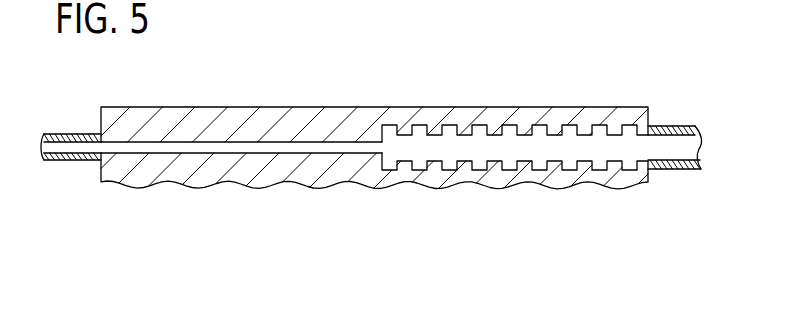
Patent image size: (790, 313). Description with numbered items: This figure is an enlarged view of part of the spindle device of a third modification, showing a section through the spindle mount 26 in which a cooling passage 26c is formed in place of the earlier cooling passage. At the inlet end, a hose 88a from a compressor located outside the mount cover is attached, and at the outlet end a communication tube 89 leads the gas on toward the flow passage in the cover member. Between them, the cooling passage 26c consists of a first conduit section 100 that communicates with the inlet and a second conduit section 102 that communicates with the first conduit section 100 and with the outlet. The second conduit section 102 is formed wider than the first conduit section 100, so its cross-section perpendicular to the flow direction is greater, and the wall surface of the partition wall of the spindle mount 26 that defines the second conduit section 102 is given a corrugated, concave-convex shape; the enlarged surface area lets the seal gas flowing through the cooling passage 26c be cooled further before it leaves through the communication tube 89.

The spindle mount 26 is at (247, 114).
The cooling passage 26c is at (374, 204).
The hose 88a is at (62, 134).
The communication tube 89 is at (675, 126).
The first conduit section 100 is at (301, 147).
The second conduit section 102 is at (515, 188).